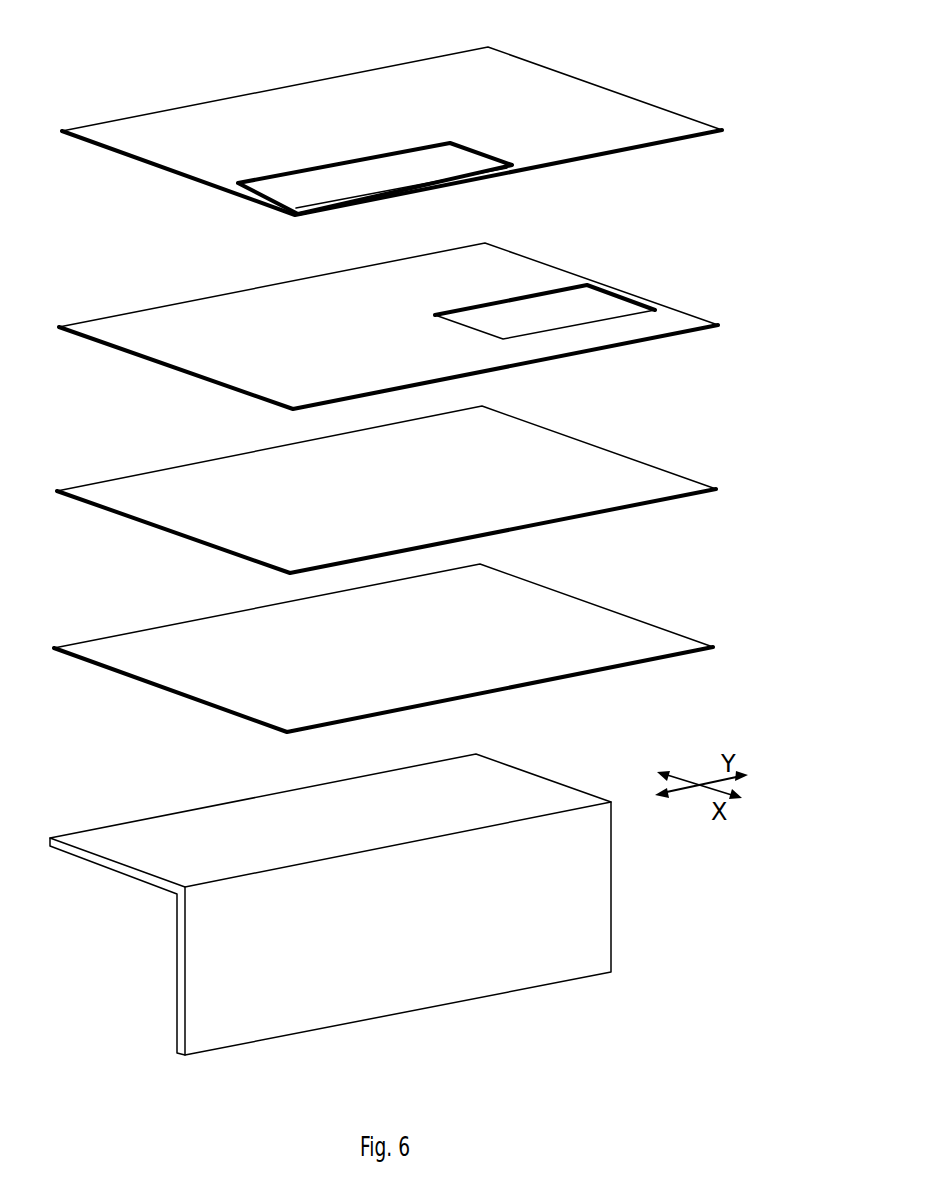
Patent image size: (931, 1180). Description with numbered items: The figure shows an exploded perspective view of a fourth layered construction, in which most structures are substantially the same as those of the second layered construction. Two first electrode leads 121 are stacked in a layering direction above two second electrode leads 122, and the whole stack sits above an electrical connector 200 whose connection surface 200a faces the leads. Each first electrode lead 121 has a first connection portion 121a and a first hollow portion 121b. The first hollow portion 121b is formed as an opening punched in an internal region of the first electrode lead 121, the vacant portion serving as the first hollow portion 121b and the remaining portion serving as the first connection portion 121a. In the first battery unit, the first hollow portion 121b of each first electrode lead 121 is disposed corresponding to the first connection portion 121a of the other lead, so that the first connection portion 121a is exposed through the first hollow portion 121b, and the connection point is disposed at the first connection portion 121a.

The first electrode lead 121 is at (388, 222).
The first connection portion 121a is at (550, 128).
The first hollow portion 121b is at (363, 178).
The second electrode lead 122 is at (175, 513).
The electrical connector 200 is at (314, 901).
The connection surface 200a is at (130, 840).